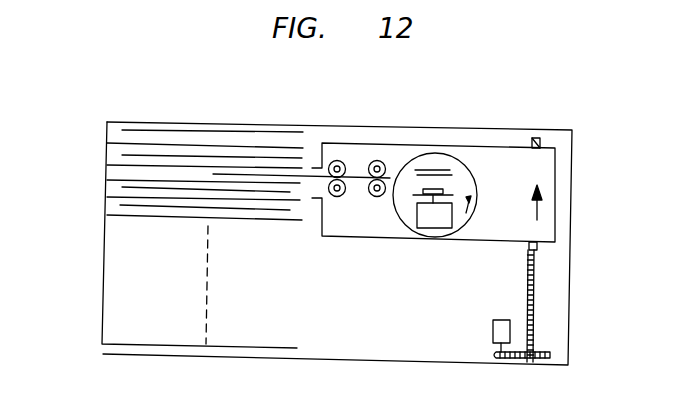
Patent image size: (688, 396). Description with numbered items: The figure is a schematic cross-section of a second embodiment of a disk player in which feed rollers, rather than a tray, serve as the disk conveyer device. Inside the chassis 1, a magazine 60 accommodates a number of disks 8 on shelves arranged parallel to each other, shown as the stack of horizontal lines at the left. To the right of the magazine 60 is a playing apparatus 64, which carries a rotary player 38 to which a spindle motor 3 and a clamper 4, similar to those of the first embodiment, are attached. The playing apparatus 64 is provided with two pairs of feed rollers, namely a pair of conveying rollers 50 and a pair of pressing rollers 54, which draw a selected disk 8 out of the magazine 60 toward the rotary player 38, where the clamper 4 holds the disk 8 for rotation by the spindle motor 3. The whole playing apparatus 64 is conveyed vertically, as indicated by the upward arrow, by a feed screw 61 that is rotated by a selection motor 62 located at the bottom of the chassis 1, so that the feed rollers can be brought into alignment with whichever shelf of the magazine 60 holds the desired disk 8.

The chassis 1 is at (470, 128).
The spindle motor 3 is at (437, 218).
The clamper 4 is at (436, 170).
The disks 8 is at (185, 138).
The rotary player 38 is at (462, 185).
The conveying rollers 50 is at (377, 197).
The pressing rollers 54 is at (377, 160).
The magazine 60 is at (106, 231).
The feed screw 61 is at (534, 302).
The selection motor 62 is at (496, 336).
The playing apparatus 64 is at (544, 224).